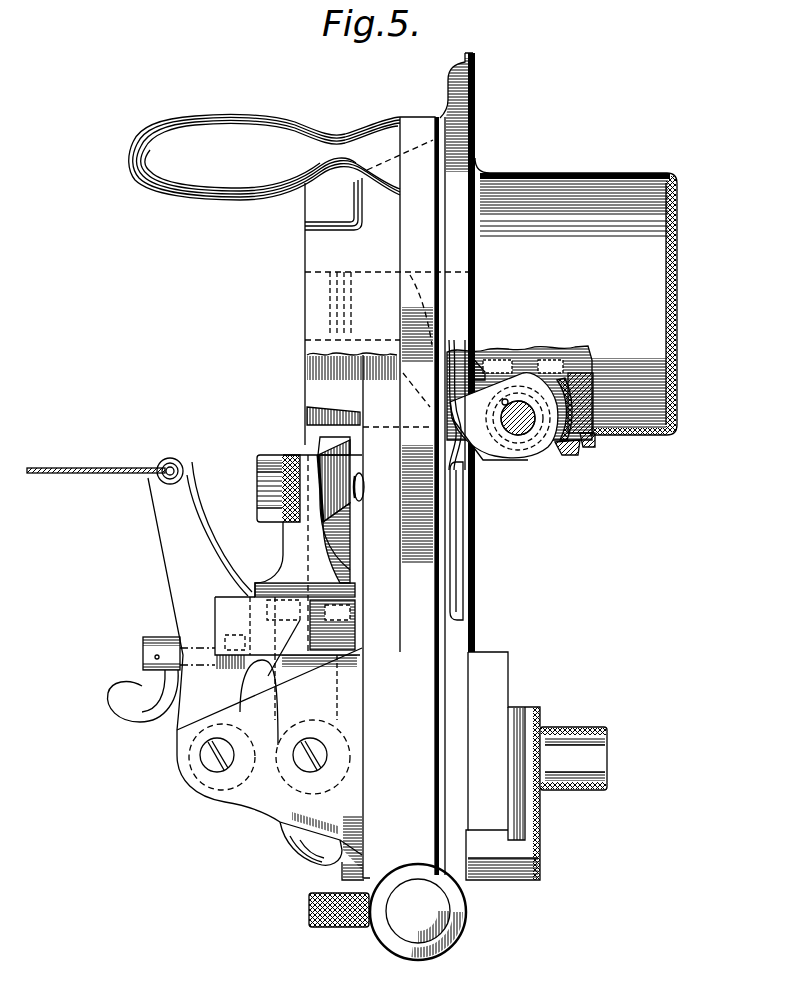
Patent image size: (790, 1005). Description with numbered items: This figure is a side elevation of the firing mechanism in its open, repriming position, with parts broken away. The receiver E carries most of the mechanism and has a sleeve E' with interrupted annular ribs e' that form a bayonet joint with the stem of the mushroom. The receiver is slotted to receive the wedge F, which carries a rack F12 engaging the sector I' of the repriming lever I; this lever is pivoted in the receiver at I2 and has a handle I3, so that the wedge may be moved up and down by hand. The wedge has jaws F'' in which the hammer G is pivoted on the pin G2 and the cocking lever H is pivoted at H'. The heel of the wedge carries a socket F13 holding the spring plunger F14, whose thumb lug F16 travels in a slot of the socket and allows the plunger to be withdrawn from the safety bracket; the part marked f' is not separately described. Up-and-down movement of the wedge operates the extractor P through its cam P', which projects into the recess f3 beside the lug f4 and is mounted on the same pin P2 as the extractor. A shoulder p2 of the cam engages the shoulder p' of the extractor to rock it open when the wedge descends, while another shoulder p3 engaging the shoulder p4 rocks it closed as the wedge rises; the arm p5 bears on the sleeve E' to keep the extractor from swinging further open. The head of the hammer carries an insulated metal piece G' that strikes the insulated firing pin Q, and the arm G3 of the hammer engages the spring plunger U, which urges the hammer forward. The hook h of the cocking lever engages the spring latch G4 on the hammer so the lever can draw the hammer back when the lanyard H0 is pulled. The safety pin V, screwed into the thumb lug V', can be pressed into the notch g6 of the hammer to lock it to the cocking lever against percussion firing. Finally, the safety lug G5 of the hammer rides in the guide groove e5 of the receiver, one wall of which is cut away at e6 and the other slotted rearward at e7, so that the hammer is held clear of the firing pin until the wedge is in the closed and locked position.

The handle I3 is at (213, 173).
The repriming lever I is at (387, 496).
The pivot of repriming lever I2 is at (360, 282).
The sector I' is at (397, 463).
The receiver E is at (475, 352).
The sleeve E' is at (576, 287).
The interrupted annular ribs e' is at (556, 377).
The extractor P is at (491, 340).
The shoulder of extractor p' is at (547, 373).
The shoulder of cam p2 is at (580, 387).
The extractor cam P' is at (504, 415).
The shoulder of cam p3 is at (575, 425).
The shoulder of extractor p4 is at (596, 437).
The arm p5 is at (570, 449).
The pin P2 is at (532, 430).
The lug f4 is at (470, 477).
The rack F12 is at (440, 527).
The recess f3 is at (453, 550).
The lanyard H0 is at (63, 453).
The cocking lever H is at (181, 594).
The jaws F'' is at (269, 759).
The pivot of cocking lever H' is at (206, 777).
The pin G2 is at (314, 768).
The arm G3 is at (300, 833).
The spring plunger U is at (340, 872).
The hook h is at (287, 650).
The notch g6 is at (262, 665).
The insulated metal piece G' is at (309, 476).
The hammer G is at (296, 553).
The groove e5 is at (343, 550).
The cut-away shoulder e6 is at (353, 443).
The rearward slot e7 is at (308, 402).
The insulated firing pin Q is at (361, 490).
The spring latch G4 is at (250, 590).
The safety pin V is at (242, 638).
The safety lug G5 is at (357, 607).
The thumb lug V' is at (141, 679).
The wedge F is at (451, 766).
The boss f' is at (573, 739).
The socket F13 is at (460, 940).
The spring plunger F14 is at (423, 930).
The thumb lug F16 is at (335, 928).